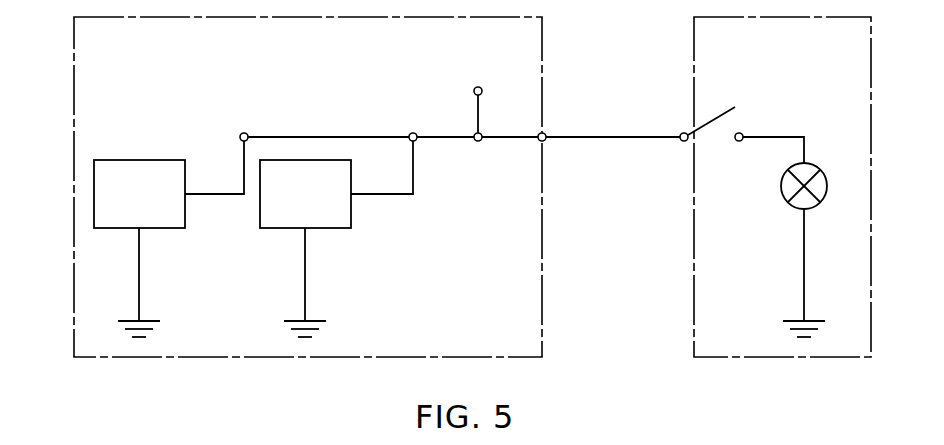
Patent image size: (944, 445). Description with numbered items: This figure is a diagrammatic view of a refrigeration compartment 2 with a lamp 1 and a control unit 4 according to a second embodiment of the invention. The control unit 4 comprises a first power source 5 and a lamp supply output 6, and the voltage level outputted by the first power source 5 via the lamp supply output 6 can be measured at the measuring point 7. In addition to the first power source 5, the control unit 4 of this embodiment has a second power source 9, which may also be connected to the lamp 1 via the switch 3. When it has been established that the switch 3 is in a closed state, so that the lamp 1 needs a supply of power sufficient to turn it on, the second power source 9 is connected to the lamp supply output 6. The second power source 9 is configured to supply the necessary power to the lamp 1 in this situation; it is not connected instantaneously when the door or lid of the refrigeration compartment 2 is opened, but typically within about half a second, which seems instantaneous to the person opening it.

The lamp 1 is at (815, 186).
The refrigeration compartment 2 is at (851, 83).
The switch 3 is at (717, 115).
The control unit 4 is at (85, 72).
The first power source 5 is at (277, 216).
The lamp supply output 6 is at (545, 140).
The measuring point 7 is at (482, 134).
The second power source 9 is at (110, 217).